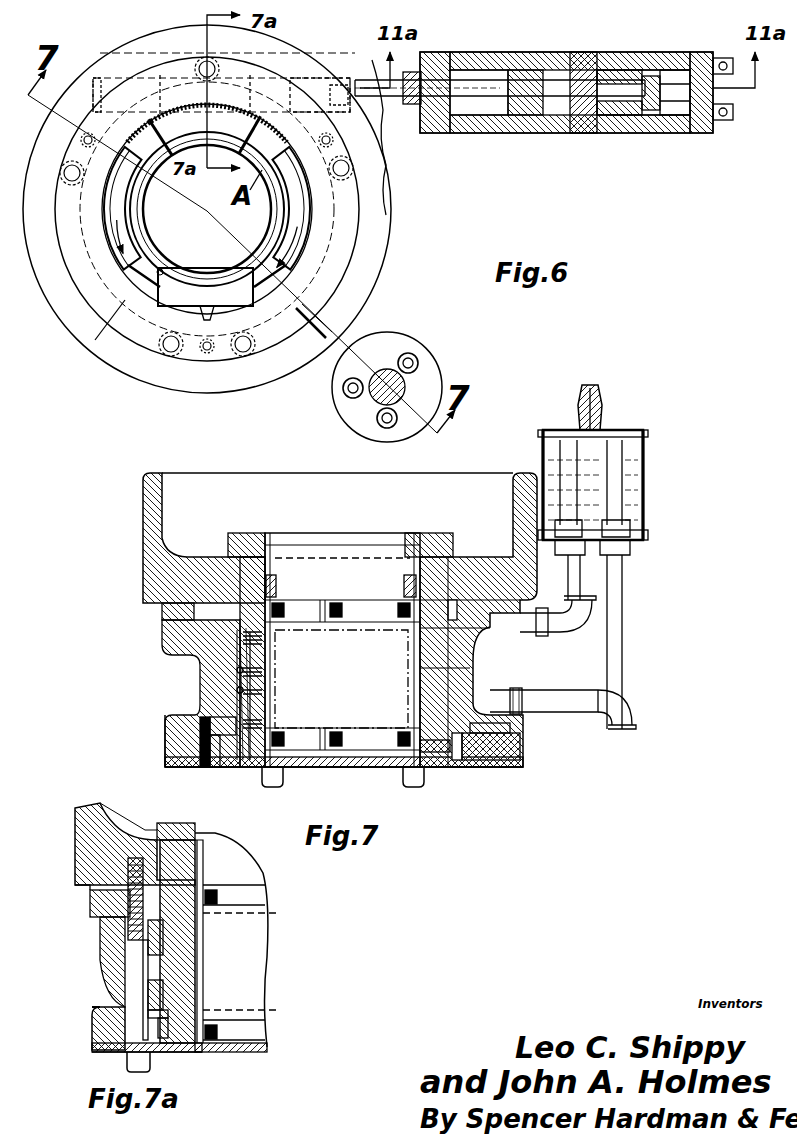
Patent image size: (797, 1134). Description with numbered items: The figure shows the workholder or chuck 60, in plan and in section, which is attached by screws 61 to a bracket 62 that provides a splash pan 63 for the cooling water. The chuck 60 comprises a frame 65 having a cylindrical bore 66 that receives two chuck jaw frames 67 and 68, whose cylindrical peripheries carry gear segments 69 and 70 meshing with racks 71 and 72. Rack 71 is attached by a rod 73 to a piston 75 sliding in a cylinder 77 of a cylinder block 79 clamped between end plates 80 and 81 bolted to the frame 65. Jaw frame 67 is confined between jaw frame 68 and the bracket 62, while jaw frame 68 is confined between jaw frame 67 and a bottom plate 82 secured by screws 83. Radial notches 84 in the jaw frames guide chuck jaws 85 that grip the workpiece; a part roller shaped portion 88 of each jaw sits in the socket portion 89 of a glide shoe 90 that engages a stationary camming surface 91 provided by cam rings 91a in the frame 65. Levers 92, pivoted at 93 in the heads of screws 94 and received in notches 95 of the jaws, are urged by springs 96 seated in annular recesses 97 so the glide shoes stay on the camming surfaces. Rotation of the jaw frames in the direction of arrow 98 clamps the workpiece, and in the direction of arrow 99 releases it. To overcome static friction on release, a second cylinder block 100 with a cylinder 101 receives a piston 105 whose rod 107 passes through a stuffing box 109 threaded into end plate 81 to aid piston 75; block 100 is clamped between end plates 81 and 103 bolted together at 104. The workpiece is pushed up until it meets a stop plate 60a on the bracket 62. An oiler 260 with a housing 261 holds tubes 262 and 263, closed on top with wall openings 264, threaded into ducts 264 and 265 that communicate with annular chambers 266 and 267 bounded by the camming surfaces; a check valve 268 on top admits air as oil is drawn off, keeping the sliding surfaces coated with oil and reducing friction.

In FIG. 6, the chuck 60 is at (260, 209).
In FIG. 7, the chuck 60 is at (163, 745).
In FIG. 7a, the chuck 60 is at (100, 1036).
In FIG. 7, the stop plate 60a is at (430, 540).
In FIG. 7, the screws 61 is at (402, 776).
In FIG. 7a, the screws 61 is at (150, 1062).
In FIG. 7, the bracket 62 is at (152, 586).
In FIG. 7a, the bracket 62 is at (85, 852).
In FIG. 7, the splash pan 63 is at (150, 512).
In FIG. 6, the chuck frame 65 is at (362, 270).
In FIG. 7, the chuck frame 65 is at (163, 728).
In FIG. 7a, the chuck frame 65 is at (105, 1050).
In FIG. 6, the cylindrical bore 66 is at (85, 297).
In FIG. 7, the cylindrical bore 66 is at (480, 693).
In FIG. 6, the chuck jaw frame 67 is at (118, 318).
In FIG. 7, the chuck jaw frame 67 is at (500, 664).
In FIG. 7a, the chuck jaw frame 67 is at (190, 942).
In FIG. 7, the chuck jaw frame 68 is at (525, 712).
In FIG. 7a, the chuck jaw frame 68 is at (190, 992).
In FIG. 6, the gear segment 69 is at (165, 107).
In FIG. 7a, the gear segment 69 is at (128, 922).
In FIG. 7a, the gear segment 70 is at (150, 1008).
In FIG. 6, the rack 71 is at (270, 83).
In FIG. 7a, the rack 71 is at (150, 935).
In FIG. 7a, the rack 72 is at (150, 993).
In FIG. 6, the rod 73 is at (372, 96).
In FIG. 6, the piston 75 is at (535, 112).
In FIG. 6, the cylinder 77 is at (480, 72).
In FIG. 6, the cylinder block 79 is at (504, 133).
In FIG. 6, the end plate 80 is at (440, 57).
In FIG. 6, the end plate 81 is at (582, 55).
In FIG. 7, the bottom plate 82 is at (490, 768).
In FIG. 7a, the bottom plate 82 is at (220, 1052).
In FIG. 7, the screws 83 is at (203, 768).
In FIG. 6, the radial notches 84 is at (256, 318).
In FIG. 6, the chuck jaw 85 is at (150, 320).
In FIG. 7, the chuck jaw 85 is at (222, 545).
In FIG. 6, the part roller shaped portion 88 is at (203, 320).
In FIG. 6, the socket portion 89 is at (222, 320).
In FIG. 6, the glide shoe 90 is at (168, 328).
In FIG. 6, the camming surface 91 is at (284, 318).
In FIG. 6, the cam rings 91a is at (115, 352).
In FIG. 7, the cam rings 91a is at (200, 613).
In FIG. 7a, the cam rings 91a is at (122, 880).
In FIG. 7, the lever 92 is at (238, 712).
In FIG. 7, the pivot 93 is at (240, 690).
In FIG. 7, the screws 94 is at (270, 690).
In FIG. 7, the notches 95 is at (190, 636).
In FIG. 7, the springs 96 is at (268, 638).
In FIG. 7, the annular recesses 97 is at (268, 720).
In FIG. 6, the arrow 98 is at (352, 220).
In FIG. 6, the arrow 99 is at (138, 222).
In FIG. 6, the cylinder block 100 is at (638, 55).
In FIG. 6, the cylinder 101 is at (688, 72).
In FIG. 6, the end plate 103 is at (733, 70).
In FIG. 6, the bolts 104 is at (733, 118).
In FIG. 6, the piston 105 is at (652, 105).
In FIG. 6, the rod 107 is at (644, 100).
In FIG. 6, the stuffing box 109 is at (618, 115).
In FIG. 6, the oiler 260 is at (422, 345).
In FIG. 7, the oiler 260 is at (643, 524).
In FIG. 7, the oiler housing 261 is at (643, 440).
In FIG. 7, the tube 262 is at (560, 440).
In FIG. 7, the tube 263 is at (612, 440).
In FIG. 7, the opening / duct 264 is at (520, 625).
In FIG. 7, the duct 265 is at (500, 745).
In FIG. 7, the annular chamber 266 is at (456, 602).
In FIG. 7, the annular chamber 267 is at (458, 768).
In FIG. 7, the check valve 268 is at (595, 420).